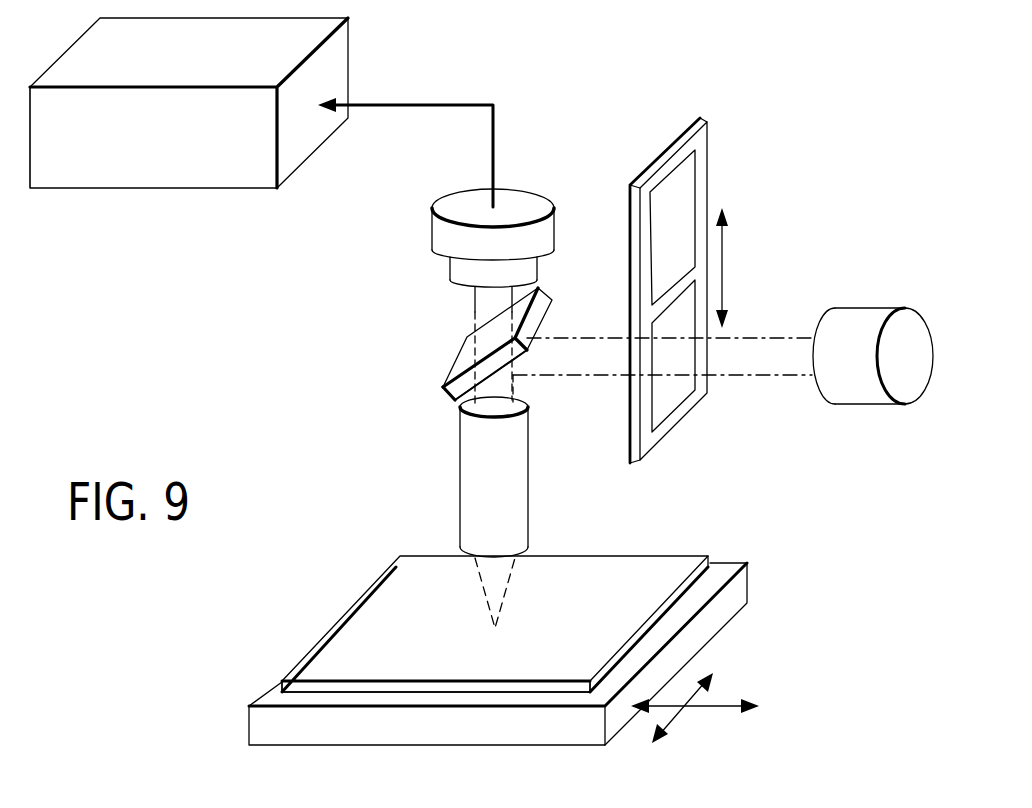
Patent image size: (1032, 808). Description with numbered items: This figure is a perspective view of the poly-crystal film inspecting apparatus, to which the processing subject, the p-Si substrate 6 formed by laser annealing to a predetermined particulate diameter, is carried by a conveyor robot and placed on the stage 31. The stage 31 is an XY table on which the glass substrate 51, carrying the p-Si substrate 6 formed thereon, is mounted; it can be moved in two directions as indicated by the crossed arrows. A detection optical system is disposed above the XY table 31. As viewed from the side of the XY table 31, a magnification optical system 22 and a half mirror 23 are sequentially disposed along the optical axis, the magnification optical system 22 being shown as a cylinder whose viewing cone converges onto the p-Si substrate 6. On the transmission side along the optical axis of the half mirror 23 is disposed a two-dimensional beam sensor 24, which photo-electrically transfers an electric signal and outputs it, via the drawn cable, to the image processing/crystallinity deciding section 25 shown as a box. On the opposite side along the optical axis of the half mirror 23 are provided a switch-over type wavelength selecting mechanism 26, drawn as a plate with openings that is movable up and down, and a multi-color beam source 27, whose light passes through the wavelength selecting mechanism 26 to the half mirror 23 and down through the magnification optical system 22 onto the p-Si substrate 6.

The image processing/crystallinity deciding section 25 is at (152, 190).
The two-dimensional beam sensor 24 is at (443, 203).
The half mirror 23 is at (455, 363).
The magnification optical system 22 is at (460, 487).
The switch-over type wavelength selecting mechanism 26 is at (707, 143).
The multi-color beam source 27 is at (867, 307).
The p-Si substrate 6 is at (345, 627).
The glass substrate 51 is at (290, 687).
The stage 31 is at (720, 632).